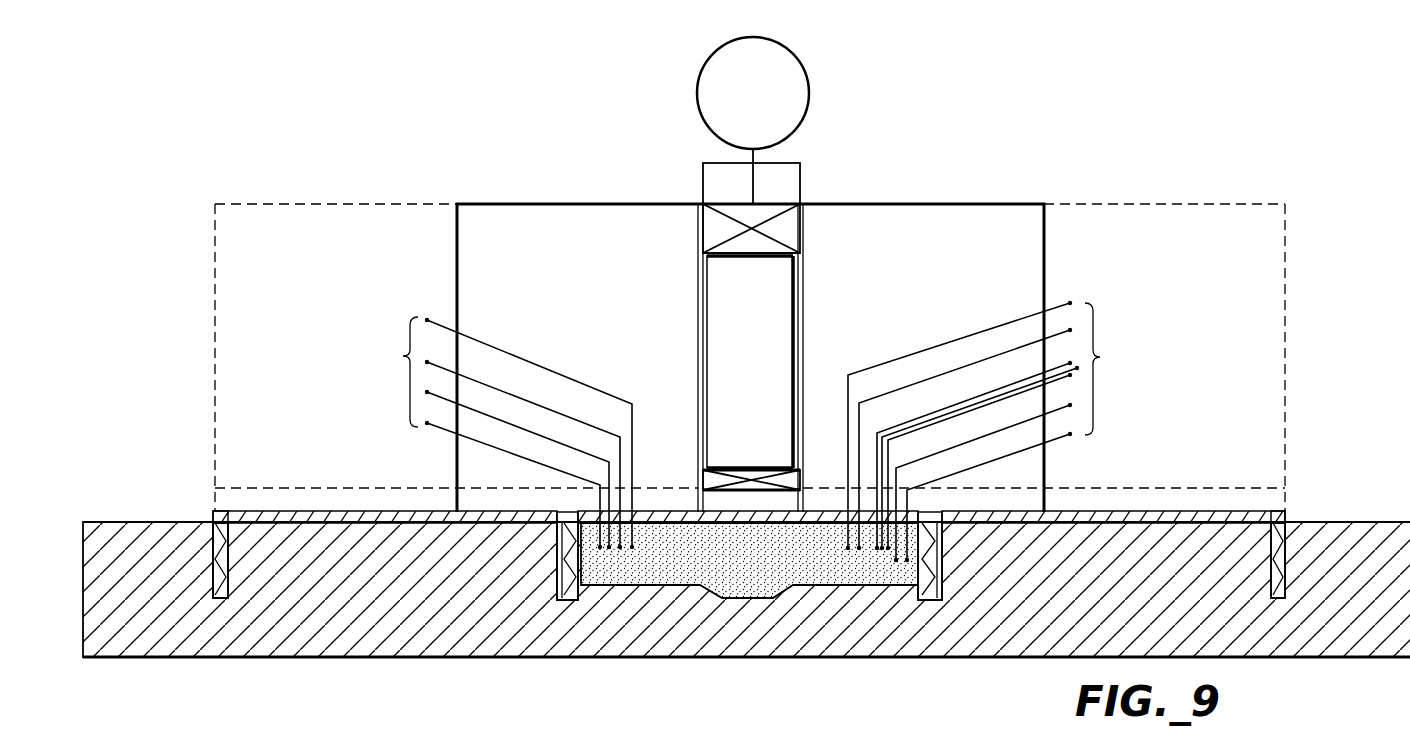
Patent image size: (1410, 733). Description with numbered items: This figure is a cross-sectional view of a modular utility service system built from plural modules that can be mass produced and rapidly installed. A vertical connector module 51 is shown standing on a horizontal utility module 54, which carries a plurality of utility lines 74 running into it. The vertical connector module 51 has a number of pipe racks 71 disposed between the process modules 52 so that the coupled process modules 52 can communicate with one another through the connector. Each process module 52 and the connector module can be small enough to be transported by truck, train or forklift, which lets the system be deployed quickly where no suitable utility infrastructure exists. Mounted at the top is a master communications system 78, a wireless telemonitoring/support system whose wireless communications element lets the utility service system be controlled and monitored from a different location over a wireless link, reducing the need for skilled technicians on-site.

The vertical connector module 51 is at (773, 203).
The process module 52 is at (588, 203).
The horizontal utility module 54 is at (812, 570).
The pipe rack 71 is at (793, 228).
The utility line 74 is at (400, 356).
The master communications system 78 is at (798, 60).